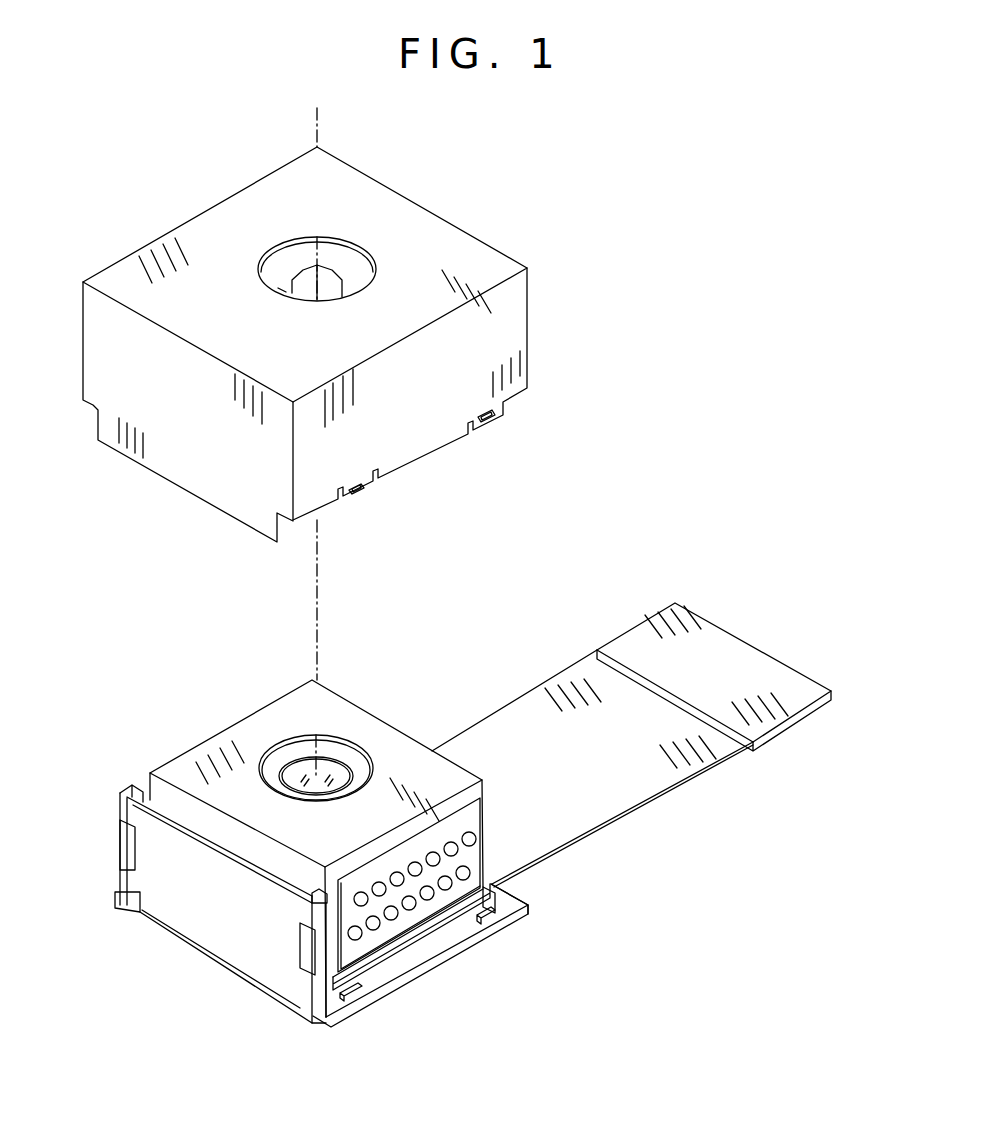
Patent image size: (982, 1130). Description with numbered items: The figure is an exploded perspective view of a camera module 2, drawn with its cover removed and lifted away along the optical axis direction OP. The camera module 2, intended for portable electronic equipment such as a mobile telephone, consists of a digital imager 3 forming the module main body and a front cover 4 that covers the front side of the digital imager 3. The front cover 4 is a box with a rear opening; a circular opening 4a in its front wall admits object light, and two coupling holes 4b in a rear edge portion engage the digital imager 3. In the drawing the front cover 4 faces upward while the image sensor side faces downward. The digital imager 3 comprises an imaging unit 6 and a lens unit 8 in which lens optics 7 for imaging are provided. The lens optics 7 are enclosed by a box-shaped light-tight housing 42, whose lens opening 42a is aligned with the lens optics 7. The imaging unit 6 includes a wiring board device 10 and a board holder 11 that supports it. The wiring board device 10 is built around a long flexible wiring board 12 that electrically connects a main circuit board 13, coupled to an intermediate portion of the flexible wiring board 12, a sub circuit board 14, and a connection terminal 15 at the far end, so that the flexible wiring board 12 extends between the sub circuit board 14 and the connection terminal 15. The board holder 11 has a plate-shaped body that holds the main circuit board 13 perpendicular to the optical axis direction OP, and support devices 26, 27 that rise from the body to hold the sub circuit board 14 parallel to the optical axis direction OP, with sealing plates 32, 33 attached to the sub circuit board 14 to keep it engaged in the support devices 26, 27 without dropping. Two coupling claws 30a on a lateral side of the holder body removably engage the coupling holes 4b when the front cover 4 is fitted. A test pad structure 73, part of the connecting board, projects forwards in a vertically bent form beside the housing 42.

The optical axis direction OP is at (318, 426).
The camera module 2 is at (117, 513).
The digital imager 3 is at (192, 713).
The front cover 4 is at (168, 483).
The circular opening 4a is at (343, 238).
The coupling holes 4b is at (492, 423).
The lens unit 8 is at (270, 702).
The light-tight housing 42 is at (453, 772).
The lens opening 42a is at (362, 777).
The lens optics 7 is at (327, 767).
The test pad structure 73 is at (475, 823).
The sub circuit board 14 is at (217, 903).
The support device 26 is at (122, 787).
The support device 27 is at (313, 893).
The sealing plate 32 is at (122, 842).
The sealing plate 33 is at (307, 942).
The board holder 11 is at (432, 946).
The imaging unit 6 is at (413, 990).
The coupling claws 30a is at (358, 997).
The wiring board device 10 is at (528, 695).
The flexible wiring board 12 is at (633, 783).
The main circuit board 13 is at (530, 917).
The connection terminal 15 is at (723, 657).